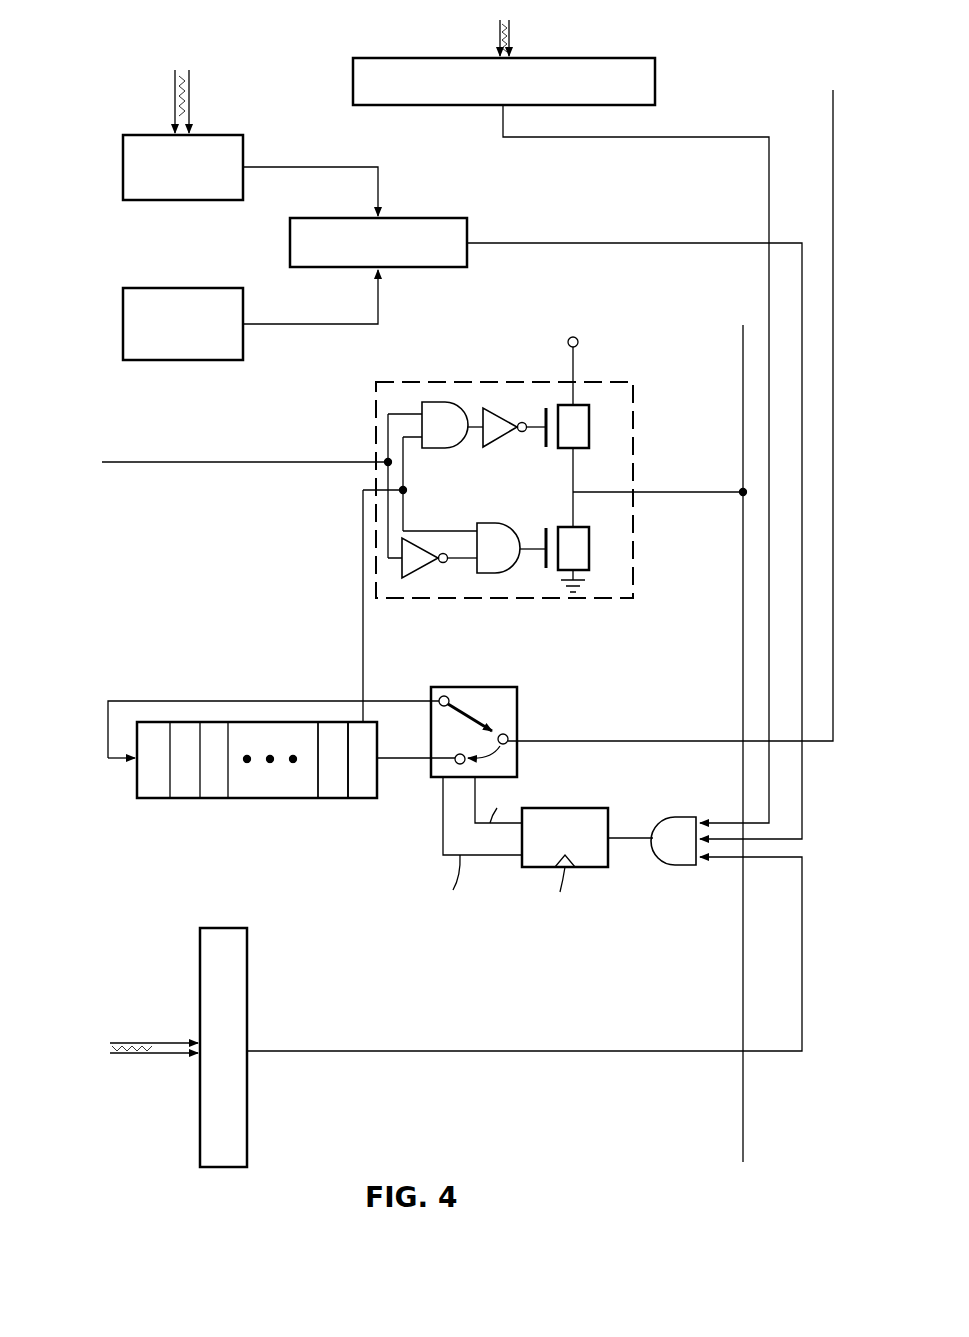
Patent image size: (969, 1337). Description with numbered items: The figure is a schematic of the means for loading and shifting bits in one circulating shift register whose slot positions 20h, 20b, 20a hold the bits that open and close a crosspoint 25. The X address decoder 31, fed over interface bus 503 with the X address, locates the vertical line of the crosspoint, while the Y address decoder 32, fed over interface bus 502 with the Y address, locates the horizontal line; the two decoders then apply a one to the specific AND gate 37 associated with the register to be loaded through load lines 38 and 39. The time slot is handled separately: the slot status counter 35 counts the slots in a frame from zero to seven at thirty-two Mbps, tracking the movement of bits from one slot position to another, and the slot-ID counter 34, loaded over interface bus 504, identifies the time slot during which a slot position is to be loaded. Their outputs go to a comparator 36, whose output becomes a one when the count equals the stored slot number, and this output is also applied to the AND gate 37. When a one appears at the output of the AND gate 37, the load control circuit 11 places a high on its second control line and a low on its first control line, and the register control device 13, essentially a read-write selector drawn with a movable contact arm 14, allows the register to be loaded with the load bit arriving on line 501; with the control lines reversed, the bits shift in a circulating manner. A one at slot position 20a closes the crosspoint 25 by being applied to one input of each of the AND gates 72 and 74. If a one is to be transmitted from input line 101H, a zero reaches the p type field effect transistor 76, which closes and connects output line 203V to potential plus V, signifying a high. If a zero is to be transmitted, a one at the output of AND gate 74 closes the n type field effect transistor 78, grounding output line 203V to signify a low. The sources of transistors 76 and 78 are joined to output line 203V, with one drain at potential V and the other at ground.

The Y address decoder 32 is at (656, 80).
The interface bus 502 is at (512, 44).
The slot-ID counter 34 is at (243, 146).
The interface bus 504 is at (190, 93).
The comparator 36 is at (290, 243).
The slot status counter 35 is at (207, 361).
The load line 39 is at (714, 137).
The interface bus 501 is at (833, 112).
The output line 203V is at (743, 1130).
The input line 101H is at (163, 462).
The crosspoint 25 is at (555, 528).
The AND gate 72 is at (446, 448).
The AND gate 74 is at (497, 523).
The p type field effect transistor 76 is at (585, 437).
The n type field effect transistor 78 is at (585, 547).
The slot position 20h is at (152, 792).
The slot position 20b is at (332, 792).
The slot position 20a is at (366, 792).
The register control device 13 is at (499, 716).
The switch contact arm 14 is at (478, 720).
The load control circuit 11 is at (522, 870).
The AND gate 37 is at (662, 870).
The X address decoder 31 is at (223, 928).
The interface bus 503 is at (154, 1043).
The load line 38 is at (440, 1051).